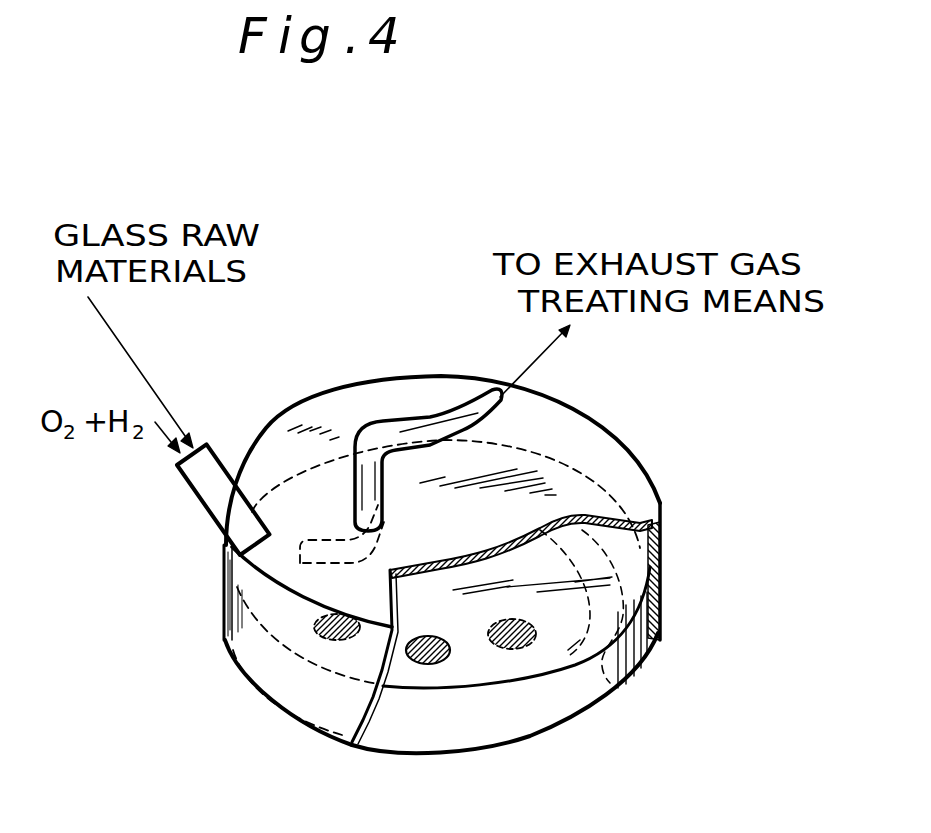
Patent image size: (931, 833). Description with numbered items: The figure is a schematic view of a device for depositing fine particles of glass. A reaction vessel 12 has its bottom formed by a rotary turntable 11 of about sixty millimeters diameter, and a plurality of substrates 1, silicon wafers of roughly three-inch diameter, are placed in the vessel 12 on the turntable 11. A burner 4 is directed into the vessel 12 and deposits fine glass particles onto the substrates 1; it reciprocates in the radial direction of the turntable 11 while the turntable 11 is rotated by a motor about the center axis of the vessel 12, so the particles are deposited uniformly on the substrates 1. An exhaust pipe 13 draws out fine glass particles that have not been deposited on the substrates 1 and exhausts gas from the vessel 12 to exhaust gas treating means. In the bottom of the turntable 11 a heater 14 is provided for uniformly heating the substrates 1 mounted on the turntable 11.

The substrate 1 is at (497, 650).
The burner 4 is at (206, 486).
The rotary turntable 11 is at (517, 718).
The reaction vessel 12 is at (667, 449).
The exhaust pipe 13 is at (418, 430).
The heater 14 is at (610, 697).